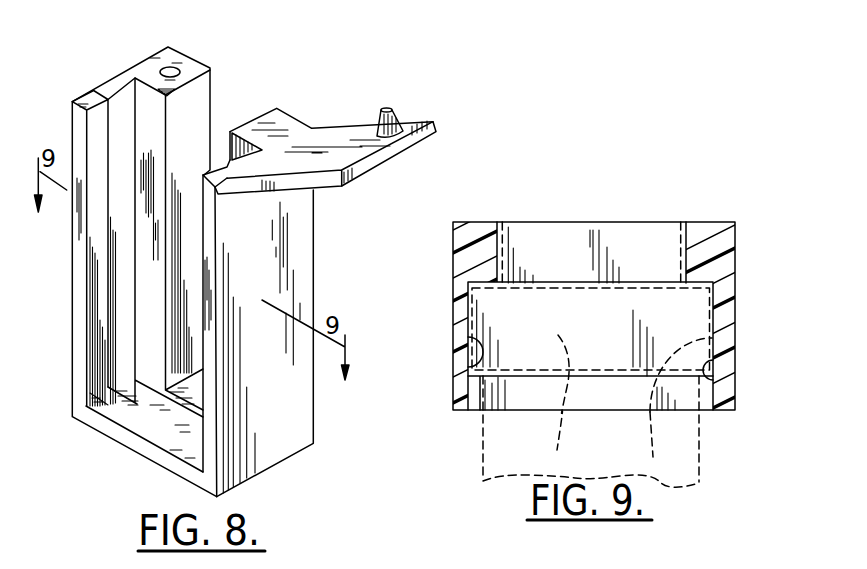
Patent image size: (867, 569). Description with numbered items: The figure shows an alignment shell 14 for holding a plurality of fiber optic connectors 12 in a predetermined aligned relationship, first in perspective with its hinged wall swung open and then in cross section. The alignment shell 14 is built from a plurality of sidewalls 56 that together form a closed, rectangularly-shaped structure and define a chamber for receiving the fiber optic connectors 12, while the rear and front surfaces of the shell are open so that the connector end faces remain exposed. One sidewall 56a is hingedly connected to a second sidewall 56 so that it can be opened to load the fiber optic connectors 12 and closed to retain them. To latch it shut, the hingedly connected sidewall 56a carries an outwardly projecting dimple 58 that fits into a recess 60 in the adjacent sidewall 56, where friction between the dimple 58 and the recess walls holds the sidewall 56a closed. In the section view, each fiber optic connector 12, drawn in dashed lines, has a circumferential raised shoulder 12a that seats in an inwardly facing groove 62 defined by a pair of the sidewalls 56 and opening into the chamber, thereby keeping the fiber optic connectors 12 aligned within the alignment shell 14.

In FIG. 9, the fiber optic connector 12 is at (557, 447).
In FIG. 9, the raised shoulder 12a is at (681, 409).
In FIG. 8, the alignment shell 14 is at (340, 222).
In FIG. 9, the alignment shell 14 is at (434, 327).
In FIG. 8, the sidewall 56 is at (75, 300).
In FIG. 9, the sidewall 56 is at (462, 243).
In FIG. 8, the hingedly connected sidewall 56a is at (355, 137).
In FIG. 8, the dimple 58 is at (398, 116).
In FIG. 8, the recess 60 is at (172, 70).
In FIG. 9, the groove 62 is at (468, 377).